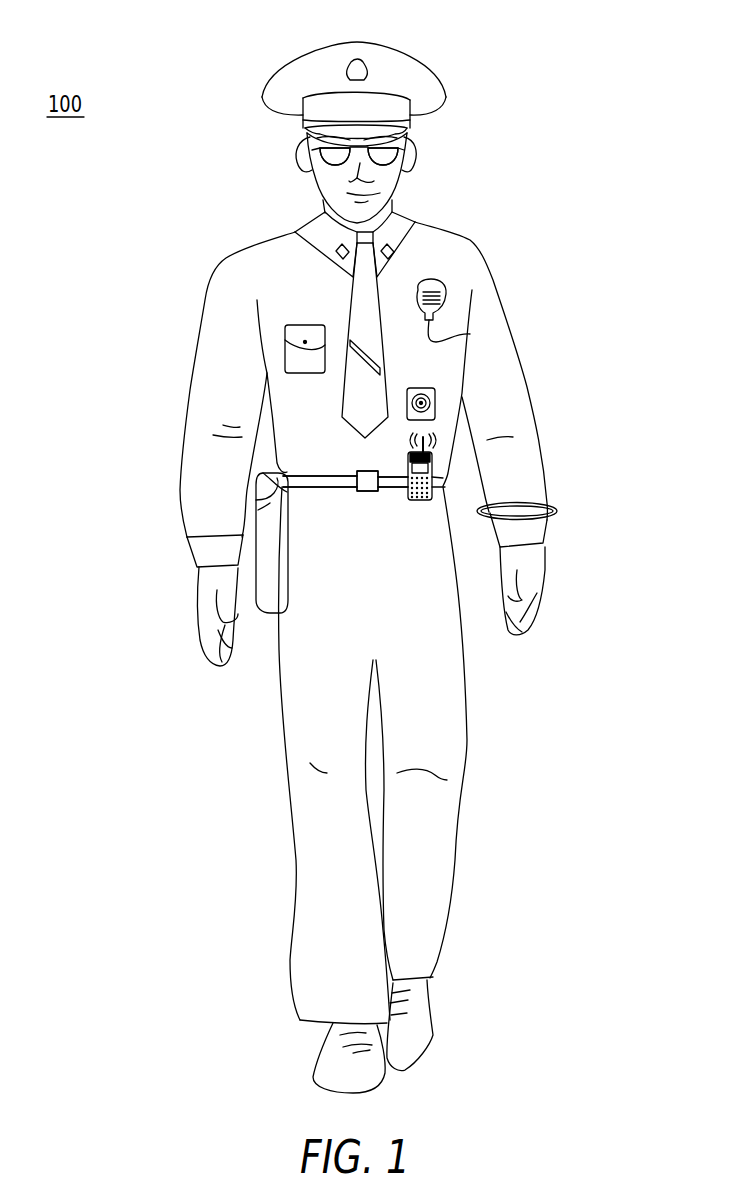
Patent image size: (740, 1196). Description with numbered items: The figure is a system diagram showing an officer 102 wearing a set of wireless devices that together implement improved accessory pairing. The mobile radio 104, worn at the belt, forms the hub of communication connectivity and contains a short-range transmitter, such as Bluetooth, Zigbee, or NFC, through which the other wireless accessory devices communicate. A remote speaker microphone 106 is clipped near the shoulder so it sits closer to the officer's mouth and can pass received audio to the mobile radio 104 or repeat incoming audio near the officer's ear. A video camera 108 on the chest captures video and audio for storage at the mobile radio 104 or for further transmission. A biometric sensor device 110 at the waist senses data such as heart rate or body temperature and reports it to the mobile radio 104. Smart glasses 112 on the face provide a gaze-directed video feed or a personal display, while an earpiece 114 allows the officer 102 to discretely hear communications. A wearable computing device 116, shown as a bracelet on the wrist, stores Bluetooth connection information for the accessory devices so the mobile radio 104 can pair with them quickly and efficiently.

The officer 102 is at (466, 231).
The mobile radio 104 is at (432, 453).
The remote speaker microphone 106 is at (446, 293).
The video camera 108 is at (435, 393).
The biometric sensor device 110 is at (340, 481).
The smart glasses 112 is at (402, 137).
The earpiece 114 is at (413, 150).
The wearable computing device 116 is at (553, 503).